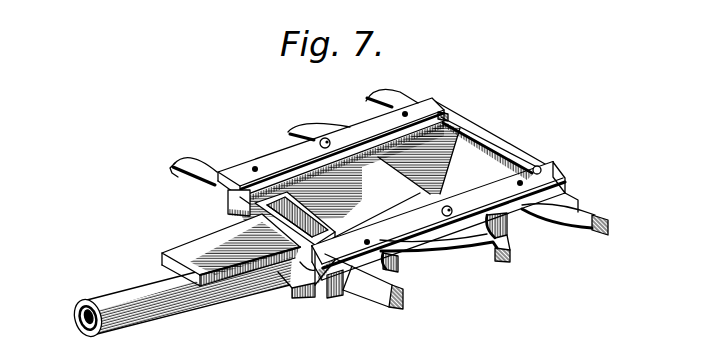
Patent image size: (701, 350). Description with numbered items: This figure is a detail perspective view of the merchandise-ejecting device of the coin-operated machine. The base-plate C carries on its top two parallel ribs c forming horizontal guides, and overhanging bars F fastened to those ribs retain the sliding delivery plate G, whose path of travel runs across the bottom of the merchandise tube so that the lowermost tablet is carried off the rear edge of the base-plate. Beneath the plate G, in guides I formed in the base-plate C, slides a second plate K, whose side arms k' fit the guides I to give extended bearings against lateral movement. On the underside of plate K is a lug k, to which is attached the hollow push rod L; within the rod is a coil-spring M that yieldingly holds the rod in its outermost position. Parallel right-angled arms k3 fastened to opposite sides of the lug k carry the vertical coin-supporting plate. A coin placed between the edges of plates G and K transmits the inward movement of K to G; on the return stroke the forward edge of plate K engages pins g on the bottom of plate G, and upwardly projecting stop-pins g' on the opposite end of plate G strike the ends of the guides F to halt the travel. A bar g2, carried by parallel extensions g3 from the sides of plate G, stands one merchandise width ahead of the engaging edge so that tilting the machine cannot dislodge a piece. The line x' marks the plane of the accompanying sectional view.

The overhanging bar F is at (430, 98).
The base-plate C is at (208, 165).
The rib c is at (227, 193).
The pin g is at (382, 178).
The stop-pin g' is at (503, 133).
The bar g2 is at (488, 142).
The extension g3 is at (462, 132).
The plate G is at (395, 176).
The guide I is at (240, 210).
The second plate K is at (200, 246).
The lug k is at (295, 250).
The arm or extension k' is at (304, 212).
The right-angled arm k3 is at (308, 298).
The rod L is at (189, 294).
The coil-spring M is at (80, 334).
The section line x' x' is at (439, 174).